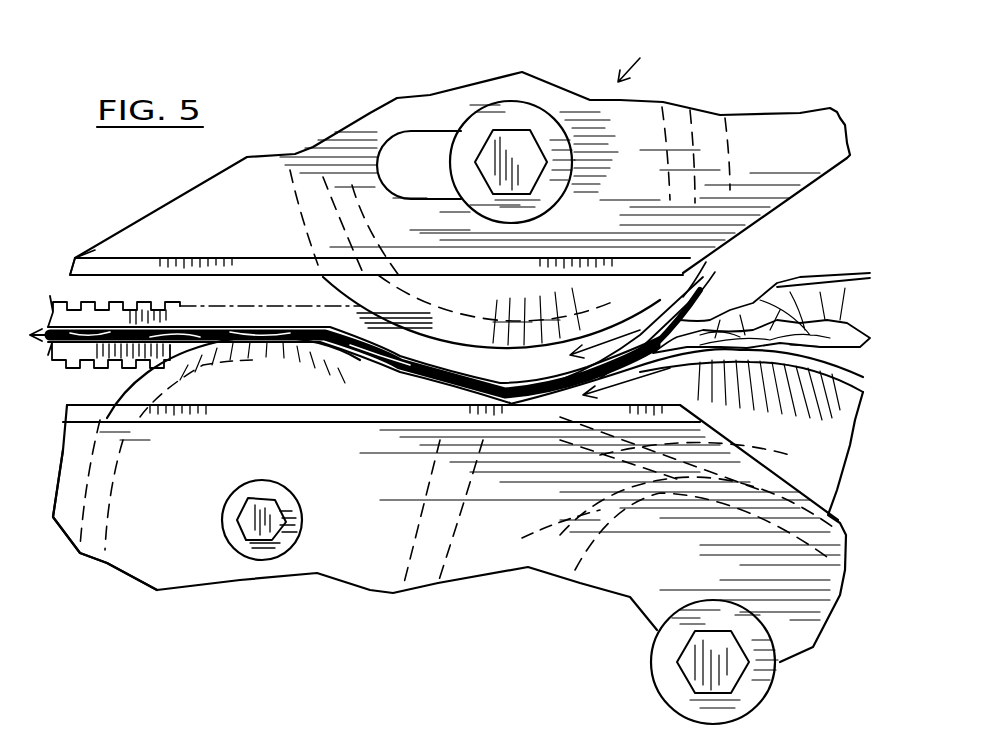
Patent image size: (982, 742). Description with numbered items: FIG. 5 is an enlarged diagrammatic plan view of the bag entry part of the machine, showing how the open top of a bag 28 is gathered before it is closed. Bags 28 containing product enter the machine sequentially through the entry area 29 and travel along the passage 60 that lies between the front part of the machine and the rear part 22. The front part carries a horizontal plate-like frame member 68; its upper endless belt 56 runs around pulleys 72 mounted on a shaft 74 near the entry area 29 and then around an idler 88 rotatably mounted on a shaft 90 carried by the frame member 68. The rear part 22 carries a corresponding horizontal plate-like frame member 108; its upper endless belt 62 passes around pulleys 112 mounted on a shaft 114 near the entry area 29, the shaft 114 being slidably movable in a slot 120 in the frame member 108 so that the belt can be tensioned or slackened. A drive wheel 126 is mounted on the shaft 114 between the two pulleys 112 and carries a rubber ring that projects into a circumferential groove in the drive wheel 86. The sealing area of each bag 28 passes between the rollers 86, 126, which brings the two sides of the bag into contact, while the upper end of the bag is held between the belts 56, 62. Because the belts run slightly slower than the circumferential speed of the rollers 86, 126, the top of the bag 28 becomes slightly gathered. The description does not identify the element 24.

The rear part 22 is at (462, 154).
The lower housing block 24 is at (476, 603).
The bag 28 is at (824, 266).
The entry area 29 is at (801, 253).
The upper endless belt 56 is at (52, 368).
The passage 60 is at (118, 266).
The upper endless belt 62 is at (78, 300).
The horizontal plate-like frame member 68 is at (133, 553).
The pulleys 72 is at (546, 534).
The shaft 74 is at (690, 645).
The drive wheel 86 is at (814, 465).
The idler 88 is at (224, 400).
The shaft 90 is at (242, 503).
The horizontal plate-like frame member 108 is at (263, 173).
The pulleys 112 is at (483, 305).
The shaft 114 is at (500, 140).
The slot 120 is at (415, 131).
The drive wheel 126 is at (705, 281).